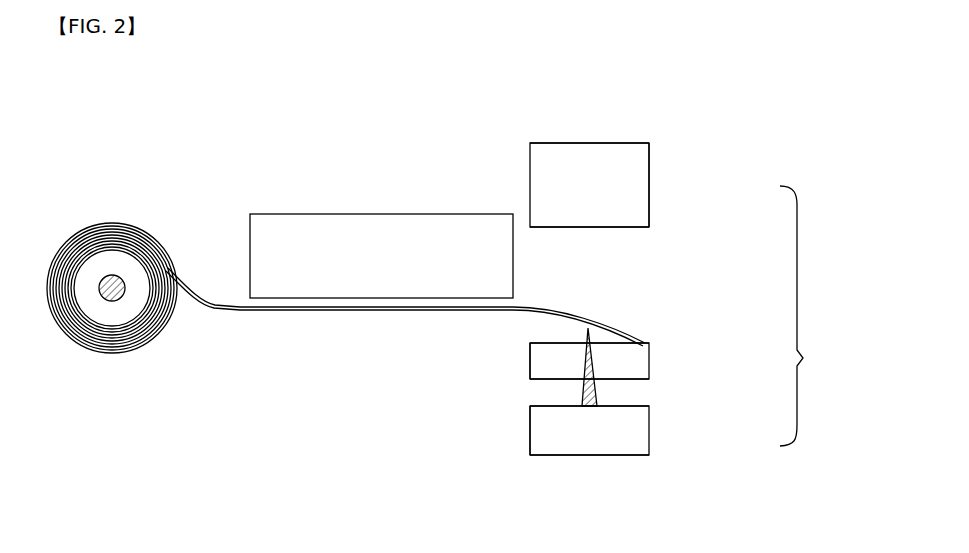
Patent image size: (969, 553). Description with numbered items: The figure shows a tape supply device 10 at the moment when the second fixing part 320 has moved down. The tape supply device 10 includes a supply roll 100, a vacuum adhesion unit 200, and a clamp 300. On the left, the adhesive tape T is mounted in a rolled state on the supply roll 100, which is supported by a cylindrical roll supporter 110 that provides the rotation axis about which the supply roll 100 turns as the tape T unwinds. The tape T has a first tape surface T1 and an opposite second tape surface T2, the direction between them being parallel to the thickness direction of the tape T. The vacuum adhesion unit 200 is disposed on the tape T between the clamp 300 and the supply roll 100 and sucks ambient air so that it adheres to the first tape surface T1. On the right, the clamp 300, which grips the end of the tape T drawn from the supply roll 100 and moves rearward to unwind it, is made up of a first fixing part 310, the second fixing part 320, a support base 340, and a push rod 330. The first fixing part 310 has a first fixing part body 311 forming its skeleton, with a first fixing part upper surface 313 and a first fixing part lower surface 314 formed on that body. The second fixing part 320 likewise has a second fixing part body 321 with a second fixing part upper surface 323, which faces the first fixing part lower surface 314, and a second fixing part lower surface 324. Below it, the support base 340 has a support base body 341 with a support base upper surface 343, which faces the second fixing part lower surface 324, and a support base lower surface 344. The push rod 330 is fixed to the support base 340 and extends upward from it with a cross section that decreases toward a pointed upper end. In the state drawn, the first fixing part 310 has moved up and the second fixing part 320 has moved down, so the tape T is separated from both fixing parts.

The tape supply device 10 is at (76, 113).
The supply roll 100 is at (116, 314).
The roll supporter 110 is at (113, 278).
The adhesive tape T is at (212, 309).
The first tape surface T1 is at (475, 305).
The second tape surface T2 is at (383, 312).
The vacuum adhesion unit 200 is at (373, 228).
The clamp 300 is at (820, 316).
The first fixing part 310 is at (652, 186).
The first fixing part body 311 is at (648, 152).
The first fixing part upper surface 313 is at (578, 142).
The first fixing part lower surface 314 is at (602, 227).
The second fixing part 320 is at (652, 356).
The second fixing part body 321 is at (552, 370).
The second fixing part upper surface 323 is at (546, 343).
The second fixing part lower surface 324 is at (630, 379).
The push rod 330 is at (597, 386).
The support base 340 is at (652, 447).
The support base body 341 is at (553, 436).
The support base upper surface 343 is at (558, 406).
The support base lower surface 344 is at (590, 456).